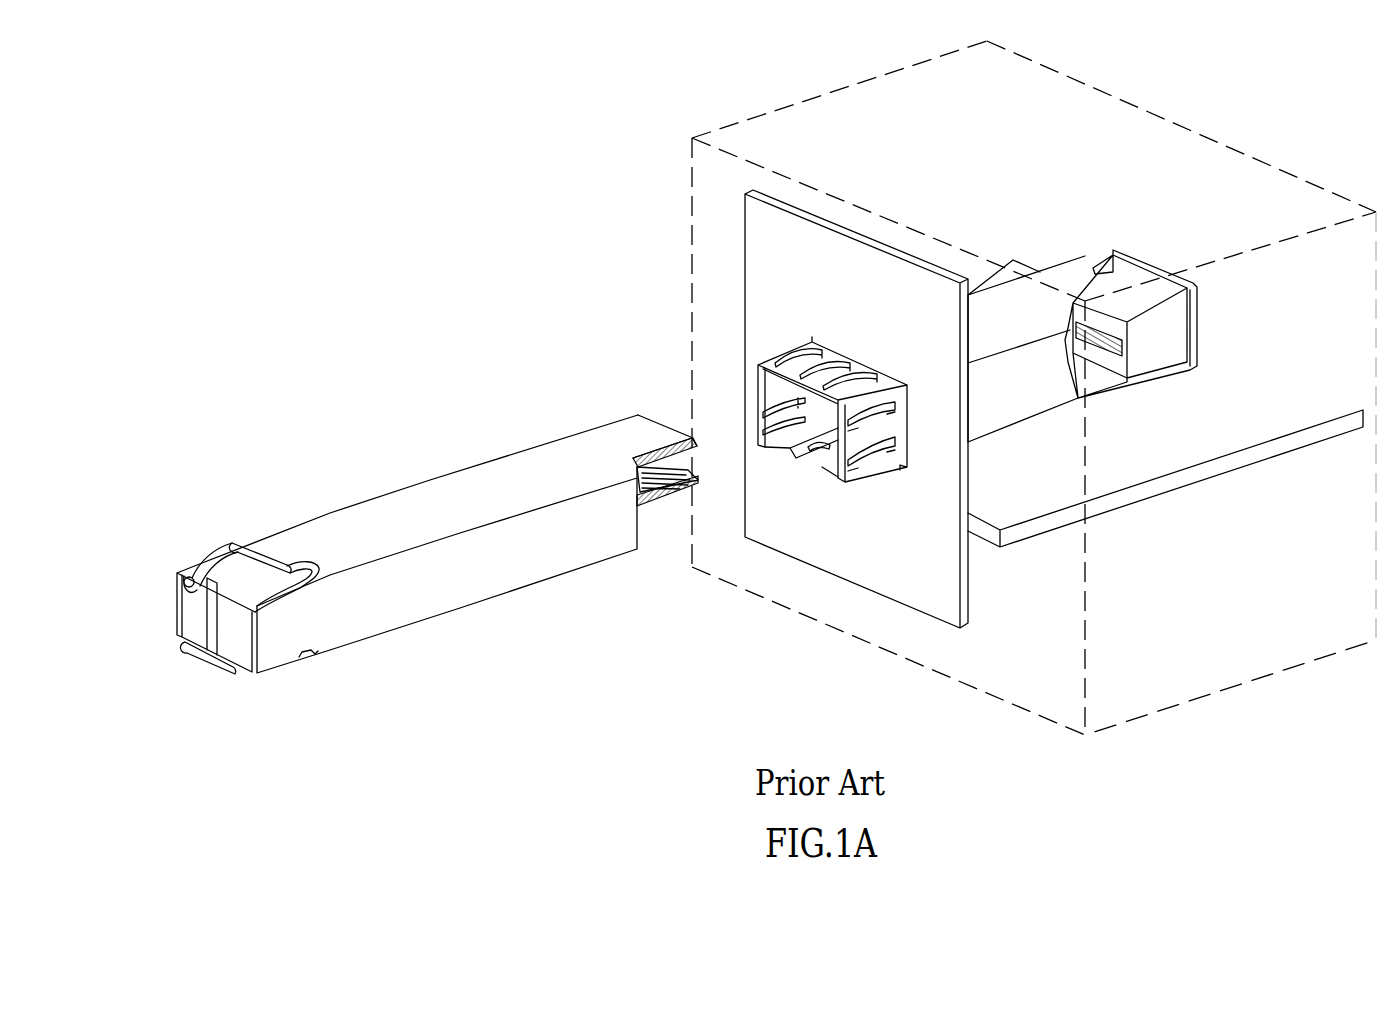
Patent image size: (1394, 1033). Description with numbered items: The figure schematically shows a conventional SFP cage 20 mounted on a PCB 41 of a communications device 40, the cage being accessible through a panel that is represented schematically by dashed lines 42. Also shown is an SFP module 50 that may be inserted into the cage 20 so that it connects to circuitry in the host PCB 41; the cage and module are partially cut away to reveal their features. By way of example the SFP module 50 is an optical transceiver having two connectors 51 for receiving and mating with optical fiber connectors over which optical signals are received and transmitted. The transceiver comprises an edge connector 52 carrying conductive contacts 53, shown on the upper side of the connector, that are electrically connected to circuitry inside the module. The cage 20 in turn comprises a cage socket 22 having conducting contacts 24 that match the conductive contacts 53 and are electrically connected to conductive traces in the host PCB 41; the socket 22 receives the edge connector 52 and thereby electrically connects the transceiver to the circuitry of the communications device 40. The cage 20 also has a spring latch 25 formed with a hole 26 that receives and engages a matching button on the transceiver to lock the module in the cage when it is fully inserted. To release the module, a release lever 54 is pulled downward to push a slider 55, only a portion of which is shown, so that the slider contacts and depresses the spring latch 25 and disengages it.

The SFP cage 20 is at (992, 397).
The cage socket 22 is at (1155, 474).
The conducting contacts 24 is at (1108, 327).
The spring latch 25 is at (813, 453).
The hole 26 is at (780, 473).
The communications device 40 is at (665, 182).
The PCB 41 is at (1243, 428).
The panel 42 is at (772, 112).
The SFP module 50 is at (490, 470).
The connectors 51 is at (227, 613).
The edge connector 52 is at (658, 500).
The conductive contacts 53 is at (667, 462).
The release lever 54 is at (279, 558).
The slider 55 is at (210, 667).